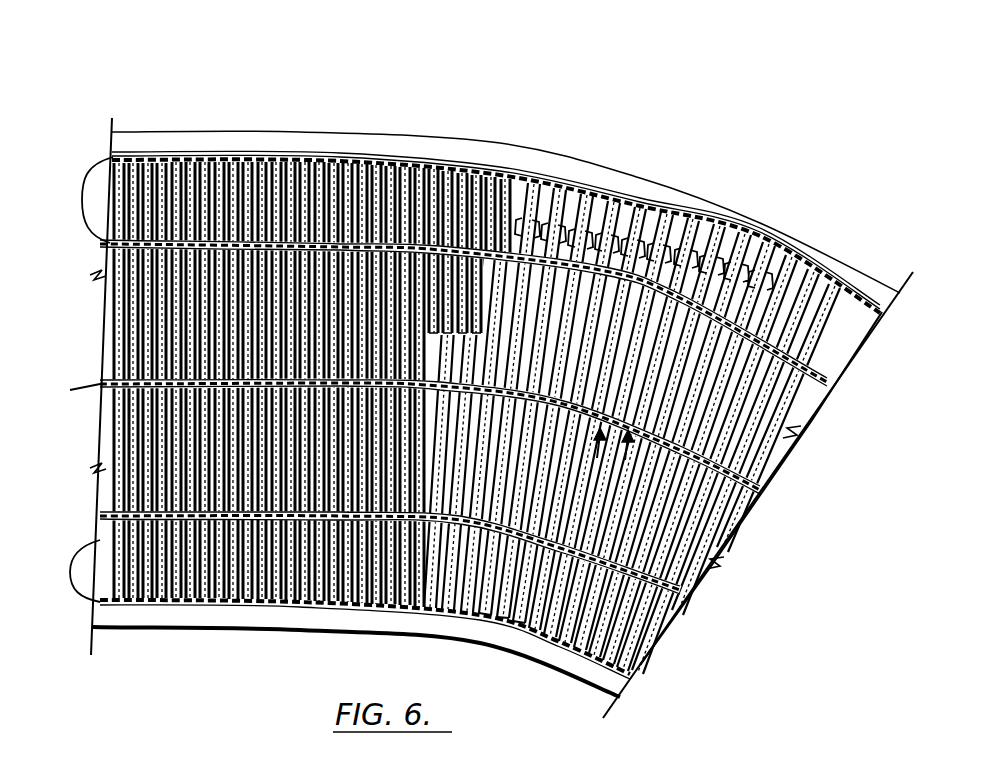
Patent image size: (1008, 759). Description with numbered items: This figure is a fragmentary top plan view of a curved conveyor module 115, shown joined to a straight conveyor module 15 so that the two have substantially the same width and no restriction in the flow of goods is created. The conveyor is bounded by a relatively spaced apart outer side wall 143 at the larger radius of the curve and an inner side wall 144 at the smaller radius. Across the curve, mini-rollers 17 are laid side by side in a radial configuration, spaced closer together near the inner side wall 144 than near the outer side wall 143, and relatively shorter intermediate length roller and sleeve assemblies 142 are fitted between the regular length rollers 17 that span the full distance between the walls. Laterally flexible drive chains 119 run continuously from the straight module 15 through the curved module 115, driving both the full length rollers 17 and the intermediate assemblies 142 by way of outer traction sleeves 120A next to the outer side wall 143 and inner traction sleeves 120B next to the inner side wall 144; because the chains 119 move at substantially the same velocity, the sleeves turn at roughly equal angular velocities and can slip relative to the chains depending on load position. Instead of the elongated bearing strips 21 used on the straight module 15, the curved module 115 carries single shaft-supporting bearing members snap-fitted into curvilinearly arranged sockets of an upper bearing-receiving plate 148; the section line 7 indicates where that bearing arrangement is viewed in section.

The straight conveyor module 15 is at (475, 369).
The slats 17 is at (300, 165).
The elongated bearing strips 21 is at (75, 386).
The curved conveyor module 115 is at (843, 400).
The drive chains 119 is at (735, 258).
The outer traction sleeves 120A is at (655, 222).
The inner traction sleeves 120B is at (520, 614).
The intermediate length roller and sleeve assemblies 142 is at (490, 166).
The outer side wall 143 is at (548, 160).
The inner side wall 144 is at (580, 664).
The upper bearing-receiving plate 148 is at (632, 418).
The section line 7 is at (617, 425).